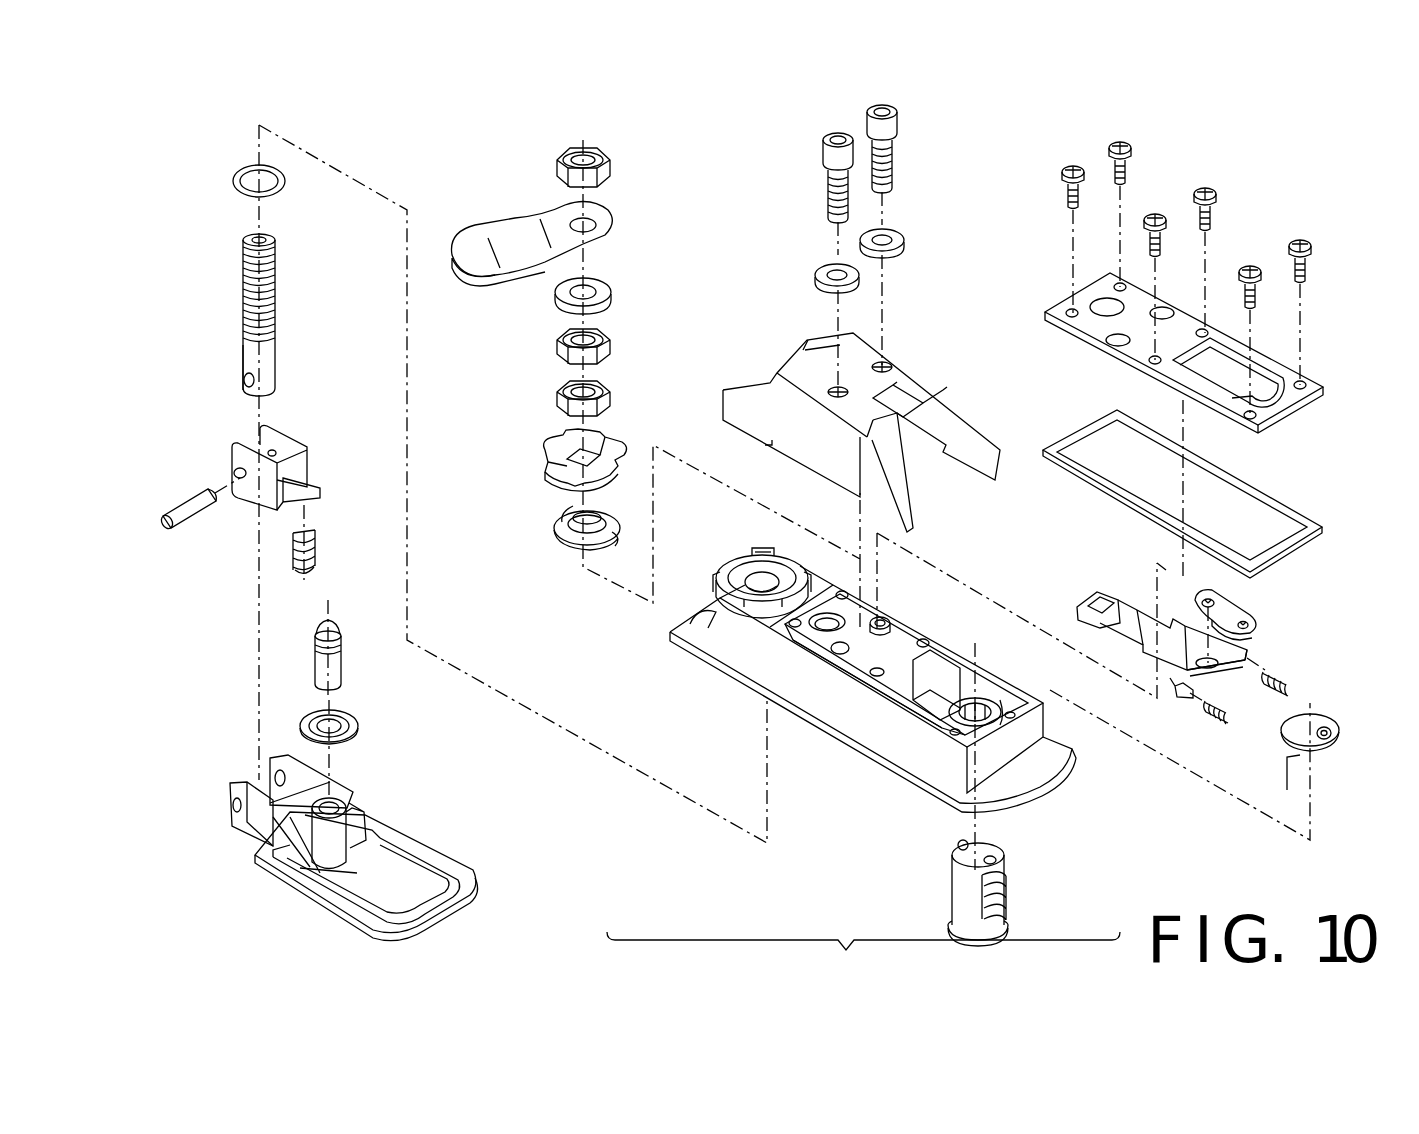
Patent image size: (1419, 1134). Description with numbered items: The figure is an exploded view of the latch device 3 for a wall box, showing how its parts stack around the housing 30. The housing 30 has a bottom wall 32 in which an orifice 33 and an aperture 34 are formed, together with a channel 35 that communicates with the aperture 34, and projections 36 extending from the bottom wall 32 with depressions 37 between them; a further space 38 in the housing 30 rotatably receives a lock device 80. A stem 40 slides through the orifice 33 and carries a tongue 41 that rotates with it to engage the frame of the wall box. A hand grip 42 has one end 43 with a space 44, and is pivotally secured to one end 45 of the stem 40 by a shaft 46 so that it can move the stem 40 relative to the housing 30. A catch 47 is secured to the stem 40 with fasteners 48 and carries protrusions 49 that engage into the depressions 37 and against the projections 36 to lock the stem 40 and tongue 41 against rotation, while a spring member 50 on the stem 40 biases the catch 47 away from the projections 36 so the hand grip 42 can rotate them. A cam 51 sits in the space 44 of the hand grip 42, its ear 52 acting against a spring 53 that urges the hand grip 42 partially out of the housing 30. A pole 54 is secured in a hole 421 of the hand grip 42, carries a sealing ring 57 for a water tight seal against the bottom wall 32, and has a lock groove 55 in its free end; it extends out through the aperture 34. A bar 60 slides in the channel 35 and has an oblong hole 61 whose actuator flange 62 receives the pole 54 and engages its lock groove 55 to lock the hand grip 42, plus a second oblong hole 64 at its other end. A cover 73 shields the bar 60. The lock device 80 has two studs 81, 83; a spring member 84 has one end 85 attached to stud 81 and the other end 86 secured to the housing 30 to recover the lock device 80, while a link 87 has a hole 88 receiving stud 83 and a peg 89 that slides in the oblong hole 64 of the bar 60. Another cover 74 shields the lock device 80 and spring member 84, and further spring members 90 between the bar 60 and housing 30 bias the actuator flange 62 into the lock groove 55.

The latch device 3 is at (1259, 176).
The housing 30 is at (830, 740).
The bottom wall 32 is at (810, 645).
The orifice 33 is at (775, 582).
The aperture 34 is at (838, 618).
The channel 35 is at (900, 650).
The projections 36 is at (765, 566).
The depressions 37 is at (735, 555).
The space 38 is at (1062, 762).
The stem 40 is at (277, 293).
The tongue 41 is at (513, 234).
The hand grip 42 is at (423, 845).
The end 43 is at (250, 824).
The space 44 is at (272, 790).
The end 45 is at (243, 357).
The shaft 46 is at (180, 500).
The catch 47 is at (612, 446).
The fasteners 48 is at (557, 403).
The protrusions 49 is at (540, 480).
The spring member 50 is at (563, 547).
The cam 51 is at (292, 438).
The ear 52 is at (313, 483).
The spring 53 is at (317, 549).
The pole 54 is at (343, 670).
The lock groove 55 is at (338, 632).
The sealing ring 57 is at (358, 733).
The bar 60 is at (1170, 680).
The oblong hole 61 is at (1100, 601).
The actuator flange 62 is at (1085, 620).
The oblong hole 64 is at (1252, 662).
The cover 73 is at (925, 372).
The cover 74 is at (1318, 380).
The lock device 80 is at (967, 898).
The stud 81 is at (1005, 856).
The stud 83 is at (958, 846).
The spring member 84 is at (1339, 724).
The end 85 is at (1326, 742).
The end 86 is at (1288, 782).
The link 87 is at (1245, 616).
The hole 88 is at (1258, 628).
The peg 89 is at (1225, 599).
The spring members 90 is at (1268, 700).
The hole 421 is at (322, 881).